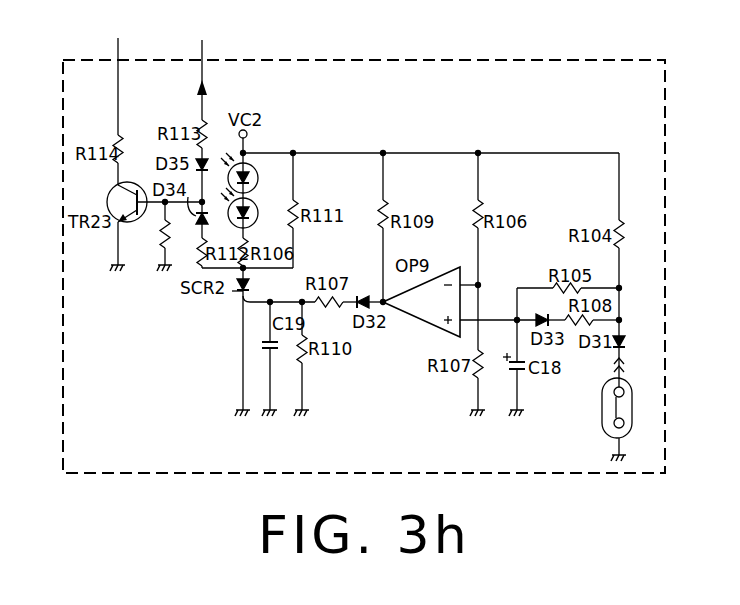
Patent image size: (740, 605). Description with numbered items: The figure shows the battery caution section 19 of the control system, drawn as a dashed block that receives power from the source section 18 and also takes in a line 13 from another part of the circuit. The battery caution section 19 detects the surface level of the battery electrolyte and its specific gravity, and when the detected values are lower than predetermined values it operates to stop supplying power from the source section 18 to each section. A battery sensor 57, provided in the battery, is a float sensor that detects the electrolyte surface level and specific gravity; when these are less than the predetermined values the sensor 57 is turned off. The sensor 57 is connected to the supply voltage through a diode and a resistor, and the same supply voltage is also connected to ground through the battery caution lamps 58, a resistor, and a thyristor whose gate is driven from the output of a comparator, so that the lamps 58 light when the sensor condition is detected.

The input line 13 is at (204, 68).
The source section 18 is at (121, 75).
The battery caution section 19 is at (597, 60).
The battery sensor 57 is at (603, 420).
The battery caution lamps 58 is at (259, 166).